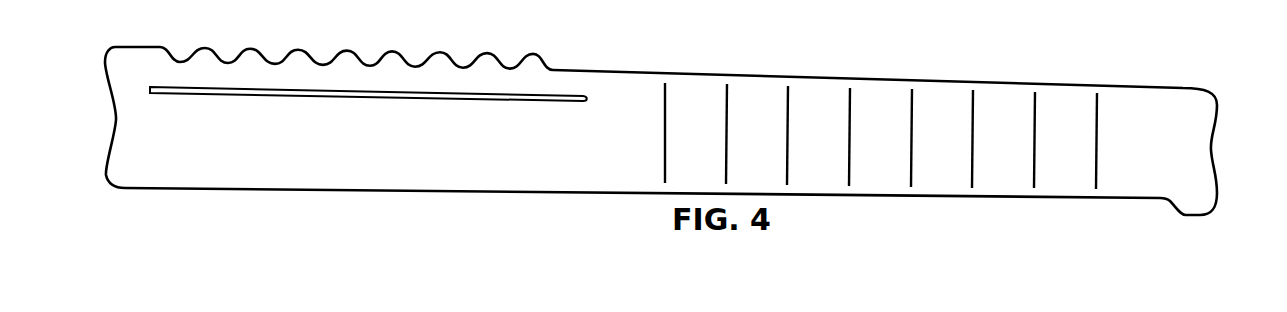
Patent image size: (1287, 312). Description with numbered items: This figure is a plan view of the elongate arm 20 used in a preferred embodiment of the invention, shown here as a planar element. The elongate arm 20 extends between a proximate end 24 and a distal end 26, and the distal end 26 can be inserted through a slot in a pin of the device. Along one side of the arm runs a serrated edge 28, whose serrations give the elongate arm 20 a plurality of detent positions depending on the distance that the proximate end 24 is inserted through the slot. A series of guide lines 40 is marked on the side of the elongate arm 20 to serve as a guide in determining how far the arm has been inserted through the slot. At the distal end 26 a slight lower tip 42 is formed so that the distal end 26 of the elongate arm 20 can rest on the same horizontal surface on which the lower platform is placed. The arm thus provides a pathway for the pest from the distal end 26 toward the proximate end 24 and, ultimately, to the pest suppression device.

The elongate arm 20 is at (493, 175).
The proximate end 24 is at (116, 121).
The distal end 26 is at (1209, 157).
The serrated edge 28 is at (355, 50).
The guide lines 40 is at (665, 158).
The lower tip 42 is at (1184, 215).